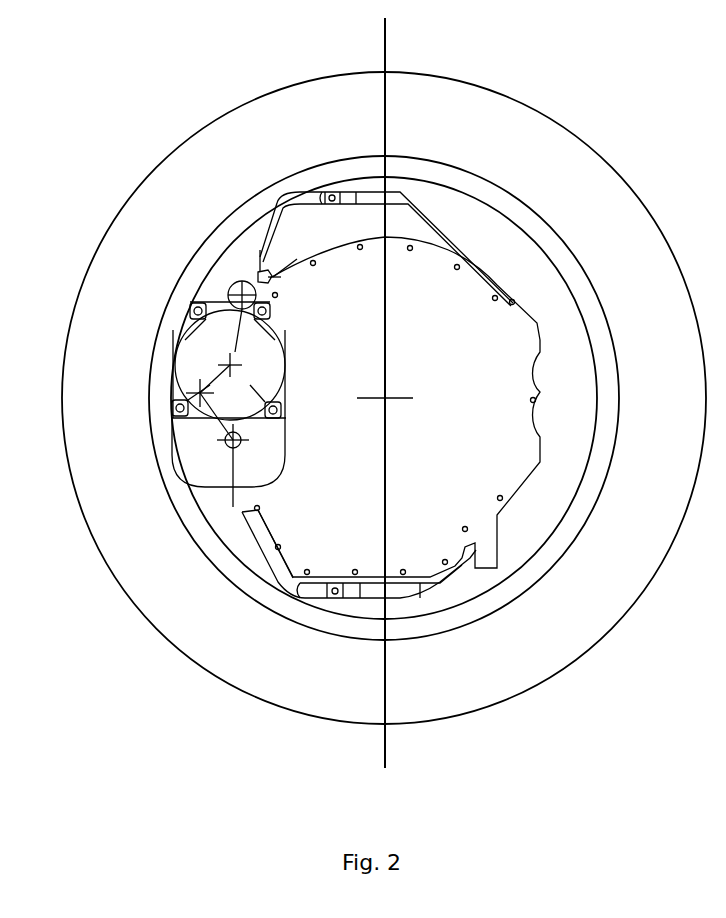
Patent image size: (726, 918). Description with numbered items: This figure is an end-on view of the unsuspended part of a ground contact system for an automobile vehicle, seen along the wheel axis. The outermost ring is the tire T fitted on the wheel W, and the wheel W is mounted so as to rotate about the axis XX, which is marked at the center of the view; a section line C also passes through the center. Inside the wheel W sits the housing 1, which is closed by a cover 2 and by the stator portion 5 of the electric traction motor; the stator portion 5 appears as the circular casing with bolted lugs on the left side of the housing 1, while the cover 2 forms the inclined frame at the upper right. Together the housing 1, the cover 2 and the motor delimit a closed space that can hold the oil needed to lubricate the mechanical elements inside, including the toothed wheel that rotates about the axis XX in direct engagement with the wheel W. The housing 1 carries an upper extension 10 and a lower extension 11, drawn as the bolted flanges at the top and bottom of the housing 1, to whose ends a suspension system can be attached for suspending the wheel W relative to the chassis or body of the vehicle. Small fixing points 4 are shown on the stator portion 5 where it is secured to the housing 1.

The housing 1 is at (490, 532).
The cover 2 is at (465, 287).
The fixing points 4 is at (295, 262).
The stator portion 5 is at (203, 353).
The upper extension 10 is at (317, 184).
The lower extension 11 is at (308, 598).
The tire T is at (543, 147).
The wheel W is at (565, 257).
The section line C is at (385, 43).
The axis XX is at (387, 413).